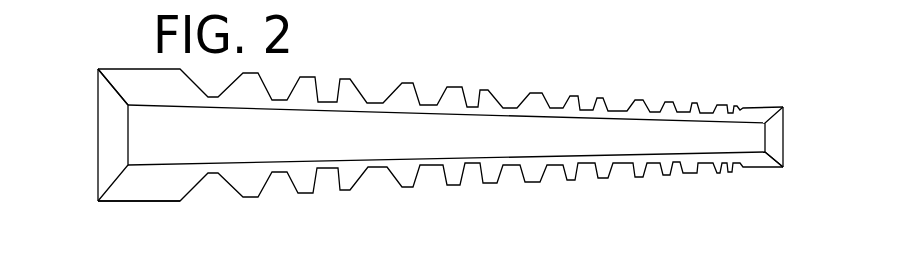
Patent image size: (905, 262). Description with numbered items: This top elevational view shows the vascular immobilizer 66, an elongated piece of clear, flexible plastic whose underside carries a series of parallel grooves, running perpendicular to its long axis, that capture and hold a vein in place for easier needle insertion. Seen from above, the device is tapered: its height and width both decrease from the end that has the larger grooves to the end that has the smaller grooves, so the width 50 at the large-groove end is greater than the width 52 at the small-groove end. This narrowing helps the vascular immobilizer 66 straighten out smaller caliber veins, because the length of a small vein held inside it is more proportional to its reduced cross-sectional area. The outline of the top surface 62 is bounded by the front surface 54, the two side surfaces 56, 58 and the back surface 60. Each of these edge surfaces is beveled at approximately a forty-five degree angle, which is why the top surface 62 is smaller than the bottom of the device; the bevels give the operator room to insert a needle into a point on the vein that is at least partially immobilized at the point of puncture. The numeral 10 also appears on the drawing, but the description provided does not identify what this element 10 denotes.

The fastener 10 is at (369, 5).
The head portion 50 is at (88, 69).
The tip portion 52 is at (787, 107).
The lower thread profile 54 is at (403, 172).
The head face 56 is at (107, 143).
The tip face 58 is at (772, 140).
The upper thread profile 60 is at (602, 112).
The shank body 62 is at (387, 137).
The head bottom surface 66 is at (122, 201).